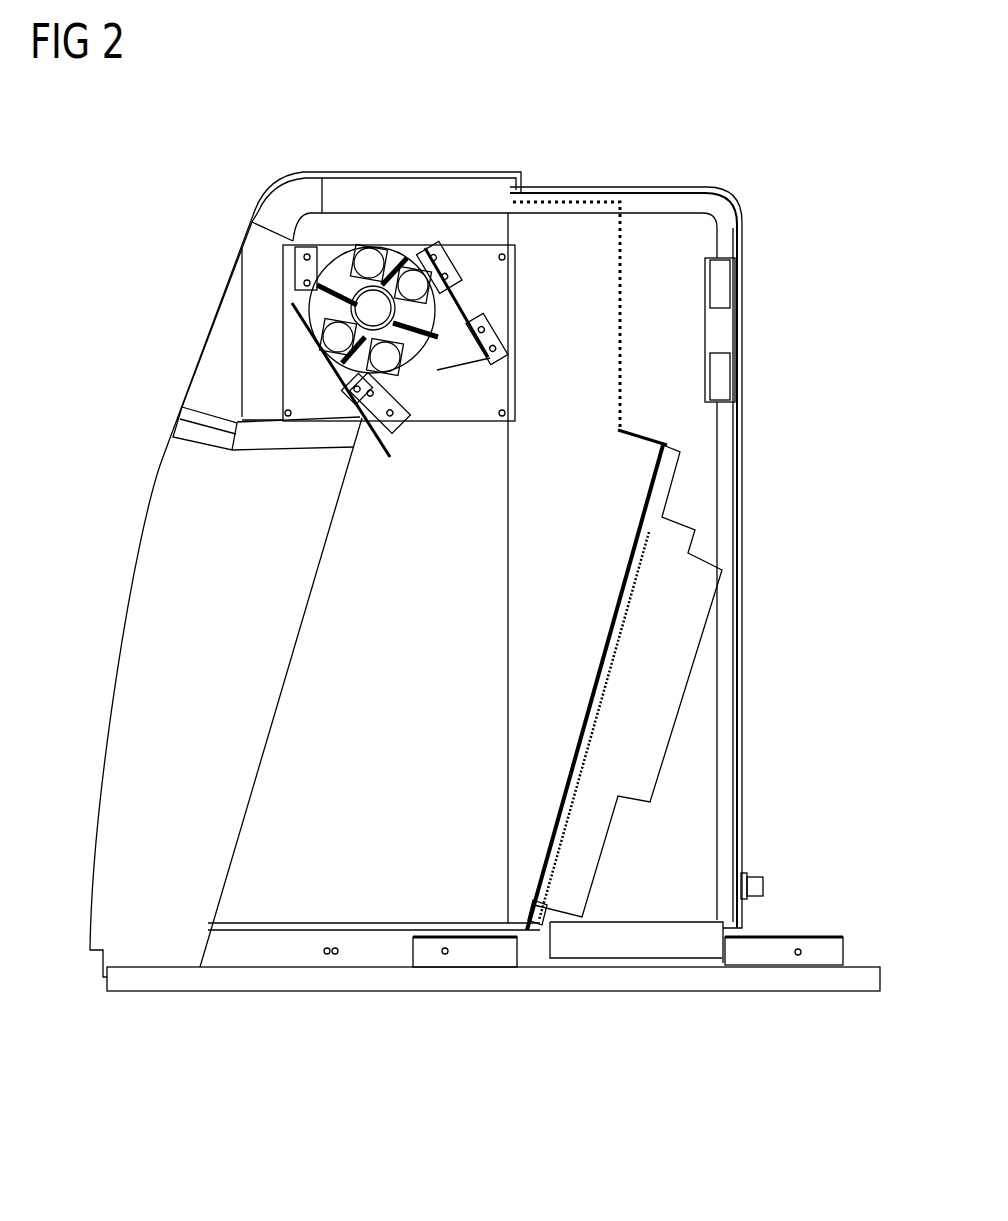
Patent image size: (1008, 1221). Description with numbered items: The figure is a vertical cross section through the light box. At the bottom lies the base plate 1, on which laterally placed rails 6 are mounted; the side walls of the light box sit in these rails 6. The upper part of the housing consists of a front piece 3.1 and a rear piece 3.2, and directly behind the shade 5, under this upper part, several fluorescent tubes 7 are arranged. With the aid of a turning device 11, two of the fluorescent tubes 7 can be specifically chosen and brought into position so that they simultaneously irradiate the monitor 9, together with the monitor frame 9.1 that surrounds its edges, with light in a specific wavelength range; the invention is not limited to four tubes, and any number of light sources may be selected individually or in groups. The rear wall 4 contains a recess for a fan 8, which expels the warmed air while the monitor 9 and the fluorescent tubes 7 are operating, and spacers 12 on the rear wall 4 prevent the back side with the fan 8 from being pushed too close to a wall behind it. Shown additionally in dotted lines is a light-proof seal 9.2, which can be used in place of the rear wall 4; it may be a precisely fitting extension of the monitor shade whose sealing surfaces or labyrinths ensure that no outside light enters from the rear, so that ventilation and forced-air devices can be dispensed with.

The base plate 1 is at (218, 978).
The front piece 3.1 is at (449, 172).
The rear piece 3.2 is at (602, 190).
The rear wall 4 is at (725, 643).
The shade 5 is at (198, 292).
The rails 6 is at (470, 953).
The fluorescent tubes 7 is at (368, 262).
The fan 8 is at (766, 332).
The monitor 9 is at (617, 673).
The monitor frame 9.1 is at (625, 572).
The light-proof seal 9.2 is at (615, 327).
The turning device 11 is at (357, 307).
The spacers 12 is at (765, 884).